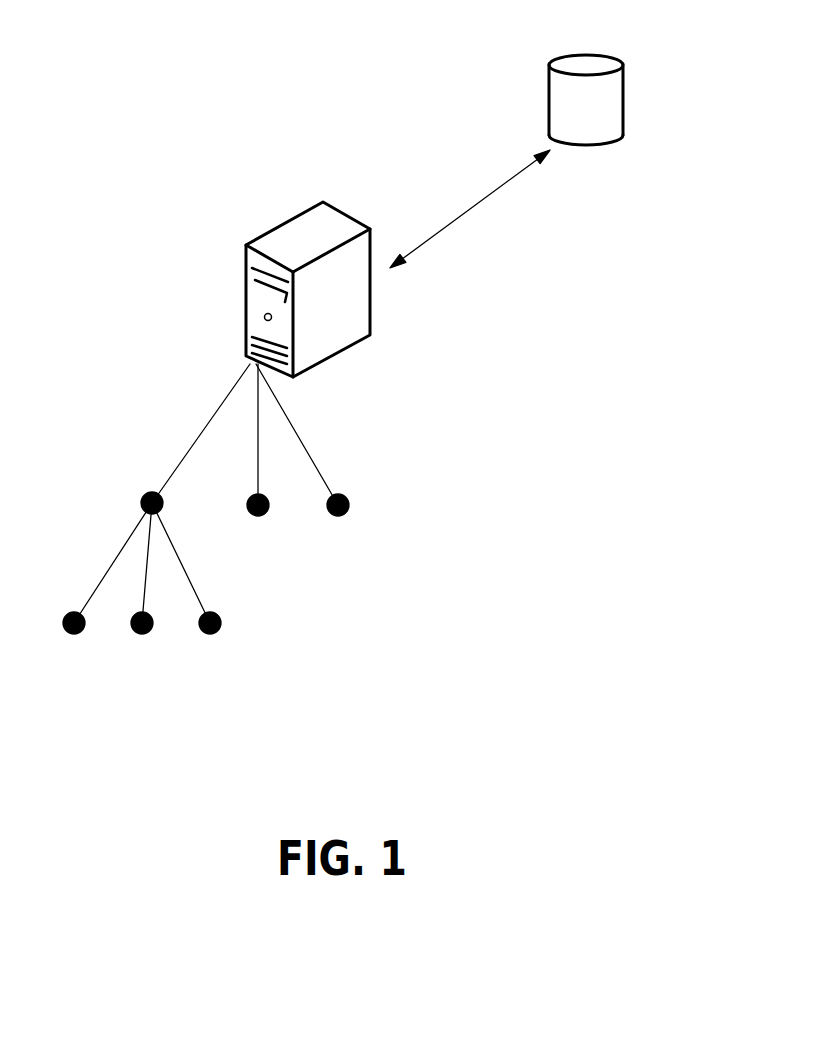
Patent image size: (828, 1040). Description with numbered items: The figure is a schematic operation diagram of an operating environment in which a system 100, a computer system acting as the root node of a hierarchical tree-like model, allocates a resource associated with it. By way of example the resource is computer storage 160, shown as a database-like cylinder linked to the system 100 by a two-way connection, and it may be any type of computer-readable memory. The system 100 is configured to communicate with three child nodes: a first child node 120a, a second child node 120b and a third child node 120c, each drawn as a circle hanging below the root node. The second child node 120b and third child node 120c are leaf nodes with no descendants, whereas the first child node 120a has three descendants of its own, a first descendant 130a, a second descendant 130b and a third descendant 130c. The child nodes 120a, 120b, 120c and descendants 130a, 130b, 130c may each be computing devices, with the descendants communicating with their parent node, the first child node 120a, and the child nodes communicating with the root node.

The system 100 is at (352, 204).
The first child node 120a is at (141, 501).
The second child node 120b is at (254, 517).
The third child node 120c is at (348, 503).
The first descendant 130a is at (80, 634).
The second descendant 130b is at (148, 634).
The third descendant 130c is at (216, 634).
The computer storage 160 is at (613, 97).